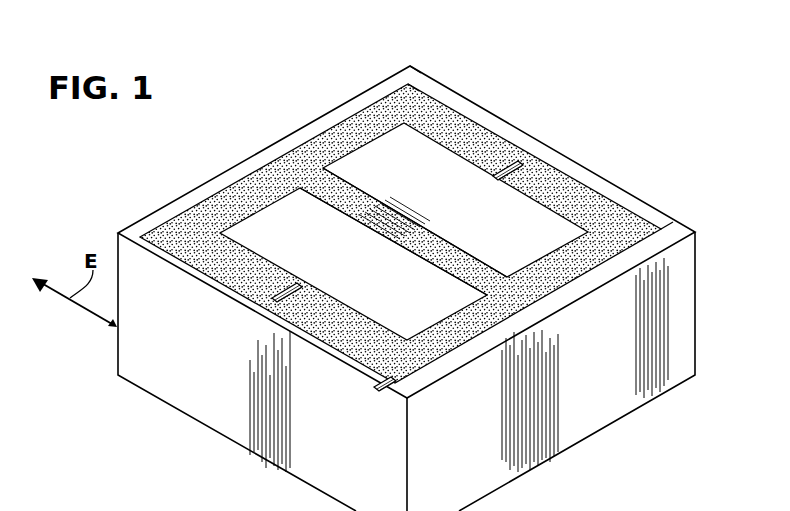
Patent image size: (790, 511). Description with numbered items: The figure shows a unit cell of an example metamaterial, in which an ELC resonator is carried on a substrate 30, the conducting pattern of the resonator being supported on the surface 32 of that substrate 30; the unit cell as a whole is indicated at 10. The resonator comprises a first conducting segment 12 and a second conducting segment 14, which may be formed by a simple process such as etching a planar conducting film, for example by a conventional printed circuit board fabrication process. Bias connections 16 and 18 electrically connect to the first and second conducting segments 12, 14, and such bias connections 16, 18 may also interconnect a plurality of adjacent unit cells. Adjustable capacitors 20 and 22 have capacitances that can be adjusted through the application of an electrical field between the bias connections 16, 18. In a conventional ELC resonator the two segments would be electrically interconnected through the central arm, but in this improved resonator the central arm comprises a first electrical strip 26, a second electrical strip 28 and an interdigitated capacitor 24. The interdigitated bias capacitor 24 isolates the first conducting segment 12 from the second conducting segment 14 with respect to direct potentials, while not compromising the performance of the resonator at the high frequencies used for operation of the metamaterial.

The package body 10 is at (372, 285).
The first conducting segment 12 is at (483, 108).
The second conducting segment 14 is at (556, 172).
The bias connection 16 is at (417, 81).
The bias connection 18 is at (655, 222).
The adjustable capacitor 20 is at (445, 126).
The adjustable capacitor 22 is at (242, 252).
The interdigitated capacitor 24 is at (388, 210).
The first electrical strip 26 is at (333, 183).
The second electrical strip 28 is at (473, 270).
The substrate 30 is at (132, 350).
The surface 32 is at (357, 271).